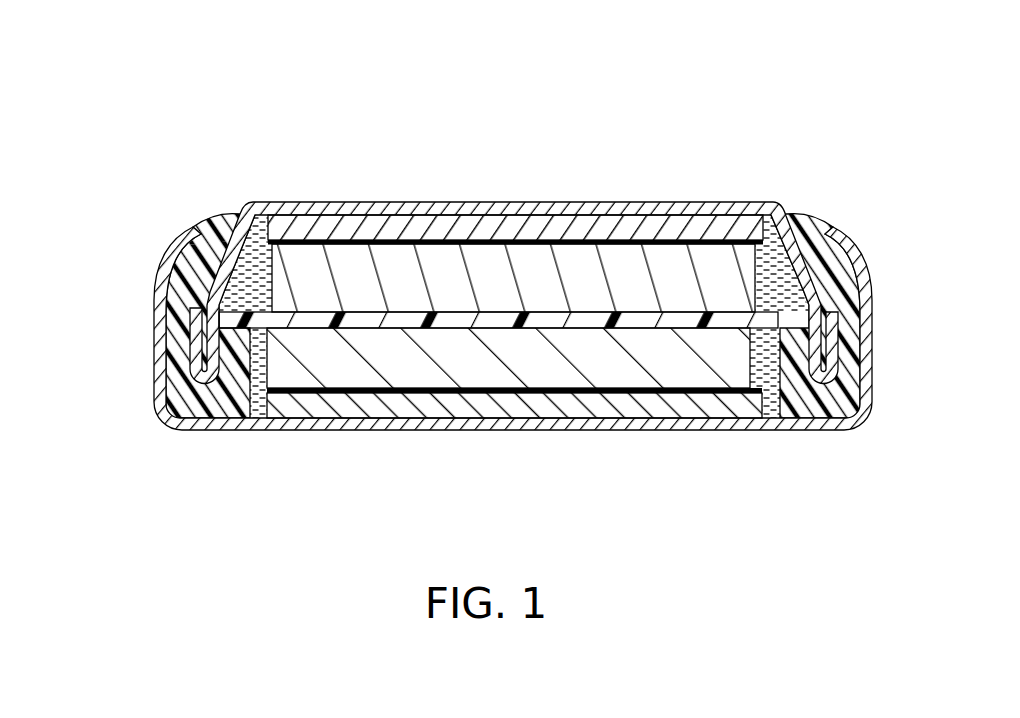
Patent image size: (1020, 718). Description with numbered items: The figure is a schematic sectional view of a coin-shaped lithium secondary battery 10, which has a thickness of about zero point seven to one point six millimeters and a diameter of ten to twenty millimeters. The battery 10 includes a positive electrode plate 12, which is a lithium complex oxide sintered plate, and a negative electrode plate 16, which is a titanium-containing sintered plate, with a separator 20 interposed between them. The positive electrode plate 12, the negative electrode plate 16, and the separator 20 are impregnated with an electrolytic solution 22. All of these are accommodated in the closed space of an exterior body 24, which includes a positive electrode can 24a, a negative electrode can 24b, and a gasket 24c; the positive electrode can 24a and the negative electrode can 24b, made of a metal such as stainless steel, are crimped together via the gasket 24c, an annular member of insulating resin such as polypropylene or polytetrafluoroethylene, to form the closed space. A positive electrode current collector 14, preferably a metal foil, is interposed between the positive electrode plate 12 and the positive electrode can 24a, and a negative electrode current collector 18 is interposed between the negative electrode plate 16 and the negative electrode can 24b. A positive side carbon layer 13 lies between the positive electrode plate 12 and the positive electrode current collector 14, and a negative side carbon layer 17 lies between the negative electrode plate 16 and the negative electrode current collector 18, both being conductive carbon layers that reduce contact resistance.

The lithium secondary battery 10 is at (763, 69).
The positive electrode plate 12 is at (740, 368).
The positive side carbon layer 13 is at (675, 395).
The positive electrode current collector 14 is at (648, 410).
The negative electrode plate 16 is at (722, 262).
The negative side carbon layer 17 is at (693, 240).
The negative electrode current collector 18 is at (629, 208).
The separator 20 is at (766, 316).
The electrolytic solution 22 is at (773, 265).
The exterior body 24 is at (138, 316).
The positive electrode can 24a is at (163, 371).
The negative electrode can 24b is at (247, 248).
The gasket 24c is at (196, 289).